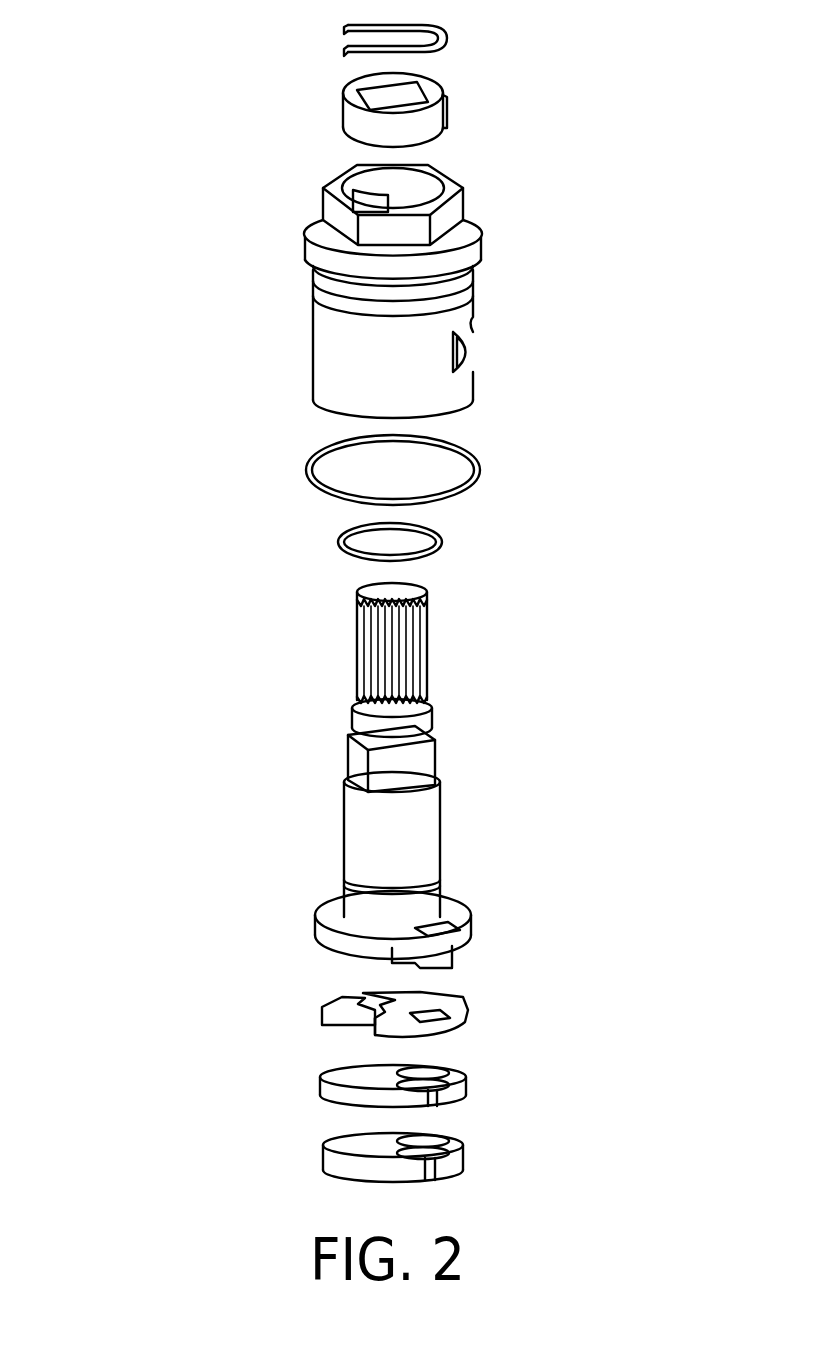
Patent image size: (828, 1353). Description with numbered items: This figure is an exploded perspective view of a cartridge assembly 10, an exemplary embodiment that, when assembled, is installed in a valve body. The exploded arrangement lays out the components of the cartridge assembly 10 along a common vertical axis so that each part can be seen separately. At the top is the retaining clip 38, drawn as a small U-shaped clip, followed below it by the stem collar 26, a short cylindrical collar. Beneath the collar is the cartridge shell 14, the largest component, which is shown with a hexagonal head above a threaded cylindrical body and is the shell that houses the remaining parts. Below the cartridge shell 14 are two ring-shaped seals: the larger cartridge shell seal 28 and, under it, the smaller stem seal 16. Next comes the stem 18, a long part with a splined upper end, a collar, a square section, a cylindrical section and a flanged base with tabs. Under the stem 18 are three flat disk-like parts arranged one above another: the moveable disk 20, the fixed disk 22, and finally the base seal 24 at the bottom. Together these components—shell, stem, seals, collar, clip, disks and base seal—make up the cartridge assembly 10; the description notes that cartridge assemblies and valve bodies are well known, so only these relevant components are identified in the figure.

The cartridge assembly 10 is at (210, 292).
The retaining clip 38 is at (448, 33).
The stem collar 26 is at (446, 132).
The cartridge shell 14 is at (483, 240).
The cartridge shell seal 28 is at (479, 453).
The stem seal 16 is at (442, 541).
The stem 18 is at (436, 733).
The moveable disk 20 is at (466, 1004).
The fixed disk 22 is at (466, 1075).
The base seal 24 is at (461, 1172).